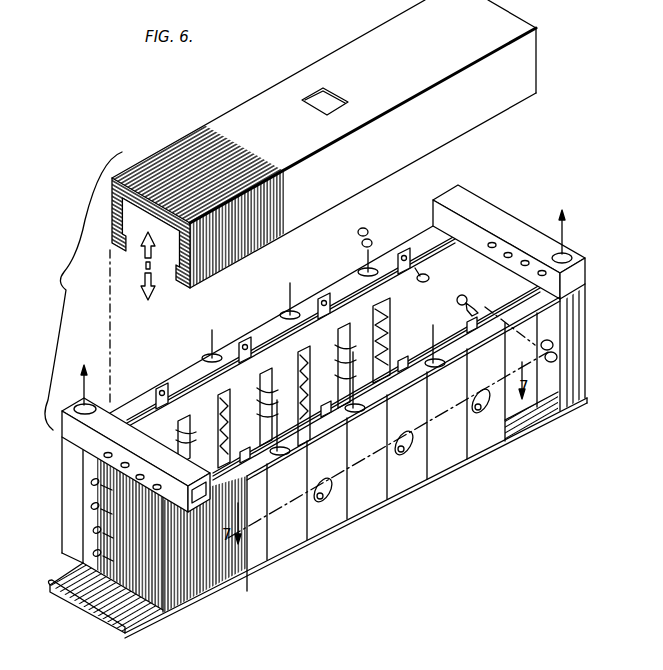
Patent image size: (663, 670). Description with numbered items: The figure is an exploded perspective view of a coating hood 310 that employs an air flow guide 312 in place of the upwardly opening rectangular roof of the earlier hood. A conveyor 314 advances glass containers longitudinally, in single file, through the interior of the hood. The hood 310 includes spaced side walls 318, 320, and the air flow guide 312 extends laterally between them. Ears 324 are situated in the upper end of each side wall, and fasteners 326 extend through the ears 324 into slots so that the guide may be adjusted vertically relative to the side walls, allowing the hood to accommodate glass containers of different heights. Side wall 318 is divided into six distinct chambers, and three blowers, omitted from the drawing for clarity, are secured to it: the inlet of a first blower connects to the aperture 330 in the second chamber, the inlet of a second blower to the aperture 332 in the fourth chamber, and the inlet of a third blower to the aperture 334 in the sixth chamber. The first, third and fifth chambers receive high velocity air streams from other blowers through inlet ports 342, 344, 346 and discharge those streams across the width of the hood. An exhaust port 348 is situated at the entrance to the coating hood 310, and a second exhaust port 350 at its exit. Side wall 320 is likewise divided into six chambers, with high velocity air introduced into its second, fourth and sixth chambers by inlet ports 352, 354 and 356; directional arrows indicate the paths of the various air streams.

The coating hood 310 is at (75, 291).
The air flow guide 312 is at (226, 133).
The conveyor 314 is at (123, 612).
The side wall 318 is at (287, 553).
The side wall 320 is at (170, 393).
The ears 324 is at (247, 343).
The fasteners 326 is at (470, 298).
The aperture 330 is at (324, 500).
The aperture 332 is at (403, 452).
The aperture 334 is at (481, 411).
The inlet port 342 is at (281, 457).
The inlet port 344 is at (357, 413).
The inlet port 346 is at (438, 369).
The exhaust port 348 is at (566, 256).
The second exhaust port 350 is at (80, 406).
The inlet port 352 is at (207, 357).
The inlet port 354 is at (286, 312).
The inlet port 356 is at (362, 271).